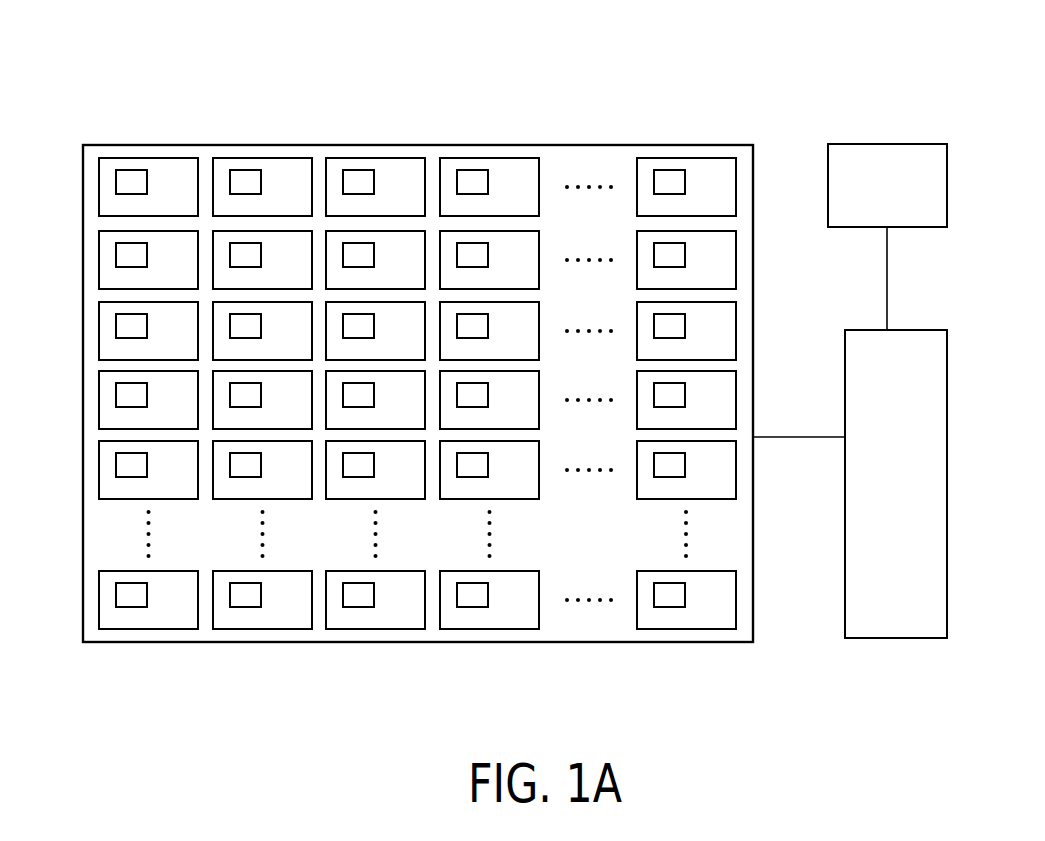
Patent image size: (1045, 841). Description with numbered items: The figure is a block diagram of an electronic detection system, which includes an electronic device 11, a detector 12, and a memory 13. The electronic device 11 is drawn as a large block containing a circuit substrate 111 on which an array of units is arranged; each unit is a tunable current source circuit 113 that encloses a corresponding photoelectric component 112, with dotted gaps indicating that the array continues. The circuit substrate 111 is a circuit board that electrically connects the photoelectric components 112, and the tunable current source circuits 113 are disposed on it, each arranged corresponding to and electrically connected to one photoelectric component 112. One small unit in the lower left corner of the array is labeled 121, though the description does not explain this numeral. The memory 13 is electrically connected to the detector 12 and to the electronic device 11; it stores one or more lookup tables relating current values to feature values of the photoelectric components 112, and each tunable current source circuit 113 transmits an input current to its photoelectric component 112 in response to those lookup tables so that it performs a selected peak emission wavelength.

The electronic device 11 is at (114, 138).
The circuit substrate 111 is at (577, 143).
The photoelectric components 112 is at (129, 180).
The tunable current source circuits 113 is at (161, 172).
The reference light emitting element 121 is at (127, 597).
The detector 12 is at (880, 142).
The memory 13 is at (897, 330).